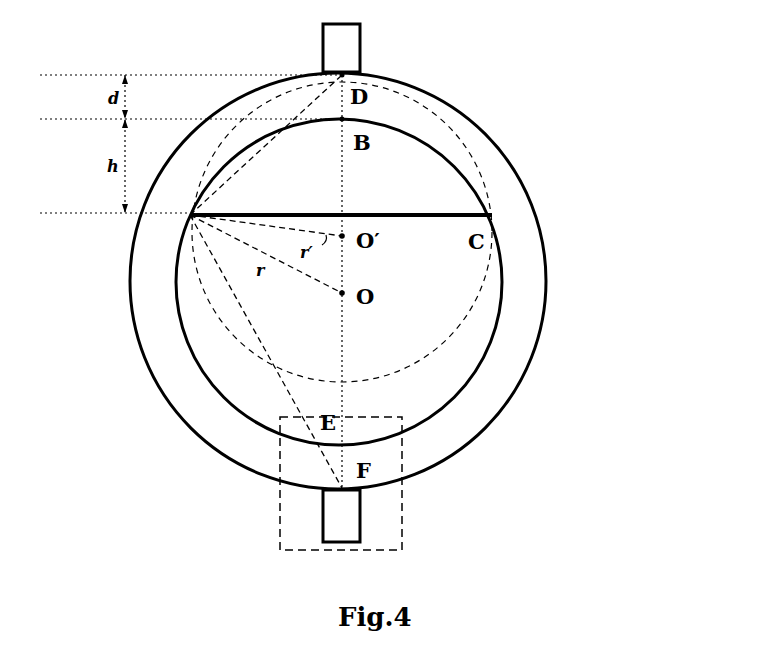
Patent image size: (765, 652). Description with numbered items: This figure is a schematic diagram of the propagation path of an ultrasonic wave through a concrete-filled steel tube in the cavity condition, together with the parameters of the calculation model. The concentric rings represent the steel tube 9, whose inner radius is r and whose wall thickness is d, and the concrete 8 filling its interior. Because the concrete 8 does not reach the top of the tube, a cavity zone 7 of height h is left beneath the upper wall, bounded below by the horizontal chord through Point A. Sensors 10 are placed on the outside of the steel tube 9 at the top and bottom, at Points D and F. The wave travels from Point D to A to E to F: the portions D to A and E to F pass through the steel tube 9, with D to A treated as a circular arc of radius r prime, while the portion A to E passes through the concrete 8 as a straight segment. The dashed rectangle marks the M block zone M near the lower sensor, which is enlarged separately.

The cavity zone 7 is at (433, 172).
The concrete 8 is at (455, 323).
The steel tube 9 is at (528, 245).
The sensors 10 is at (345, 48).
The M block zone M is at (400, 455).